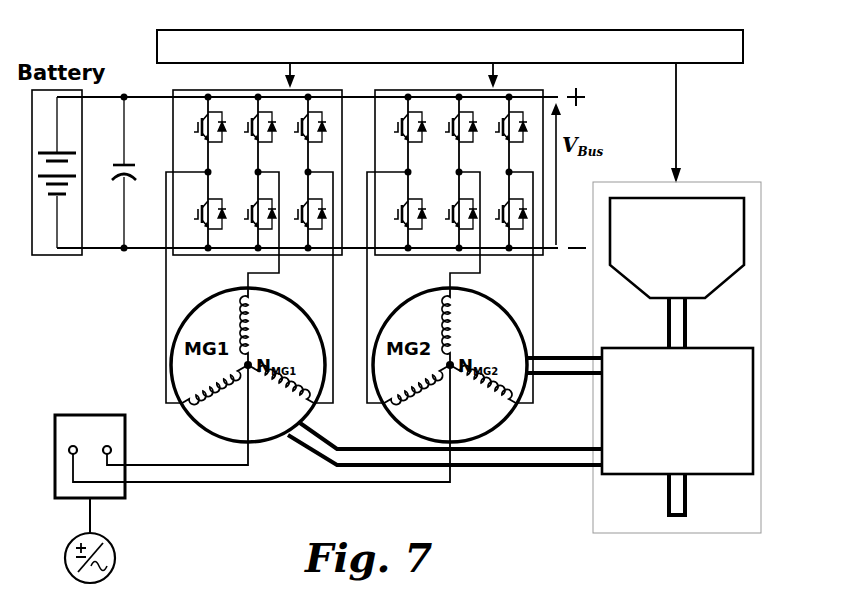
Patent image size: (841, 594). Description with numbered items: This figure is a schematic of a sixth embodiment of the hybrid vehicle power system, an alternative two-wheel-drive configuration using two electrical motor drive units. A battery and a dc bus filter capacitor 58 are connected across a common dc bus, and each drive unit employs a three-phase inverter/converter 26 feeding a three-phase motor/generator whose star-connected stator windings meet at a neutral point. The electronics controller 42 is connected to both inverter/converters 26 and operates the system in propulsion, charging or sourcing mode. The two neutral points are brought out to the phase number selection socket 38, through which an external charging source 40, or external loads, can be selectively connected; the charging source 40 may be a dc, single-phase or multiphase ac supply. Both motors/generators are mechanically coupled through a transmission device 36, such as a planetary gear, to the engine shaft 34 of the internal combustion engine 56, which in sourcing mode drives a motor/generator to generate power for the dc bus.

The electronics controller 42 is at (193, 53).
The inverter/converter 26 is at (608, 77).
The filter capacitor 58 is at (118, 178).
The internal combustion engine 56 is at (672, 225).
The engine shaft 34 is at (677, 330).
The mechanical transmission device 36 is at (634, 455).
The phase number selection socket 38 is at (83, 422).
The external charging source 40 is at (113, 552).